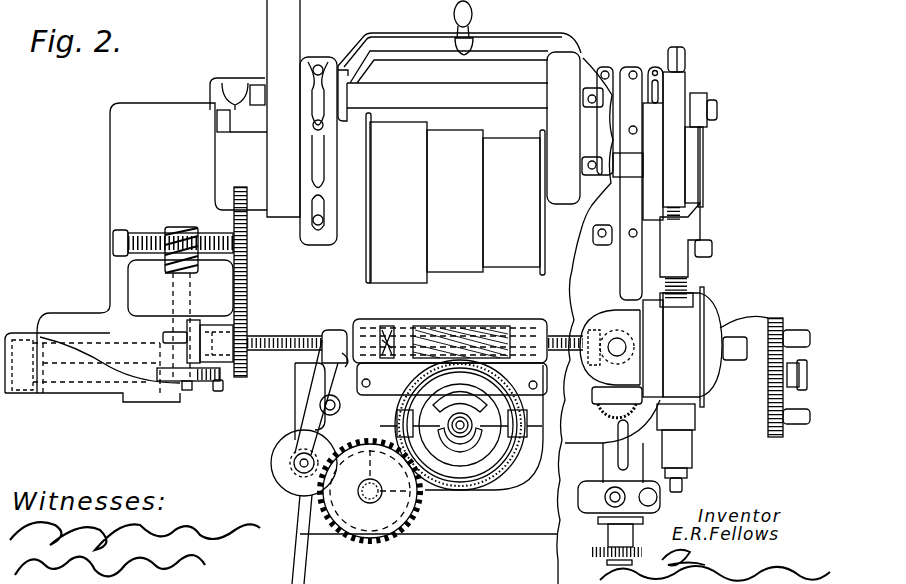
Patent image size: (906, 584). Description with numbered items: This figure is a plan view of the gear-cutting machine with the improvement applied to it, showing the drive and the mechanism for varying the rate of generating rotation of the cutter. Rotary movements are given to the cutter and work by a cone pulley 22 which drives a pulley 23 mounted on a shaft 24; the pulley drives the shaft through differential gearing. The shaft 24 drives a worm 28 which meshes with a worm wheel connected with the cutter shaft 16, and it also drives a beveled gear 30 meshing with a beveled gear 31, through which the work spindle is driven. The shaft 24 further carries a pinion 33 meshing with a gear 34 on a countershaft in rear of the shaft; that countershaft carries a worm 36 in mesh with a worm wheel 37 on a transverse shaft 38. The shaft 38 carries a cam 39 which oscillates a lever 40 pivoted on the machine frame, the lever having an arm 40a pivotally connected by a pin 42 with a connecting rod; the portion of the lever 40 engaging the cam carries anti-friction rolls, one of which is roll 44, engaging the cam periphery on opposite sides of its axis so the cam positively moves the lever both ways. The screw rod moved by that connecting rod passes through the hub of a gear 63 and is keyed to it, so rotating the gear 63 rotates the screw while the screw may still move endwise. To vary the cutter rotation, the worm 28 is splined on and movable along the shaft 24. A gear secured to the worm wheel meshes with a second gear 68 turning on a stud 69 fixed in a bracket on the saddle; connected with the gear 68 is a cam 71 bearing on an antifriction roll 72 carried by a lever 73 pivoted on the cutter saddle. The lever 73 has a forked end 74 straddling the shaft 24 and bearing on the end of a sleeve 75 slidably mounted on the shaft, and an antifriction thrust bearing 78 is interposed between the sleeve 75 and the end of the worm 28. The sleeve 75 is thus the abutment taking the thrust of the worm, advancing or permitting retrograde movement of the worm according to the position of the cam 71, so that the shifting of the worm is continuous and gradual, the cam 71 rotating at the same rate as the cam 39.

The cutter shaft 16 is at (455, 440).
The cone pulley 22 is at (677, 162).
The pulley 23 is at (692, 303).
The shaft 24 is at (282, 354).
The worm 28 is at (450, 326).
The beveled gear 30 is at (600, 370).
The beveled gear 31 is at (605, 395).
The pinion 33 is at (247, 320).
The gear 34 is at (240, 187).
The worm 36 is at (183, 226).
The worm wheel 37 is at (148, 235).
The transverse shaft 38 is at (183, 300).
The cam 39 is at (218, 392).
The lever 40 is at (85, 395).
The arm 40a is at (22, 335).
The pin 42 is at (25, 395).
The anti-friction roll 44 is at (145, 395).
The gear 63 is at (778, 345).
The gear 68 is at (372, 546).
The stud 69 is at (370, 503).
The cam 71 is at (320, 528).
The antifriction roll 72 is at (280, 468).
The lever 73 is at (310, 414).
The forked end 74 is at (328, 330).
The sleeve 75 is at (345, 340).
The antifriction thrust bearing 78 is at (388, 326).